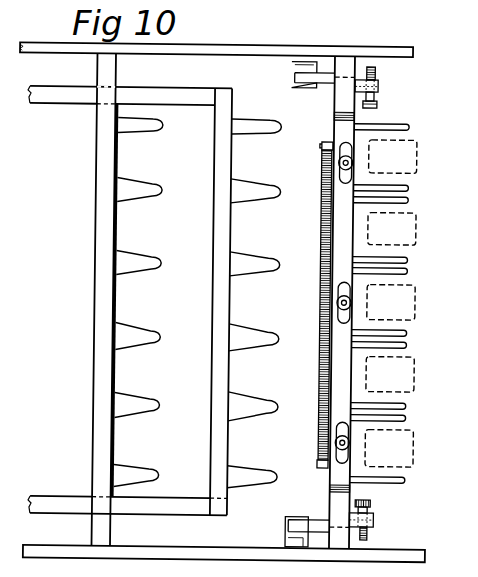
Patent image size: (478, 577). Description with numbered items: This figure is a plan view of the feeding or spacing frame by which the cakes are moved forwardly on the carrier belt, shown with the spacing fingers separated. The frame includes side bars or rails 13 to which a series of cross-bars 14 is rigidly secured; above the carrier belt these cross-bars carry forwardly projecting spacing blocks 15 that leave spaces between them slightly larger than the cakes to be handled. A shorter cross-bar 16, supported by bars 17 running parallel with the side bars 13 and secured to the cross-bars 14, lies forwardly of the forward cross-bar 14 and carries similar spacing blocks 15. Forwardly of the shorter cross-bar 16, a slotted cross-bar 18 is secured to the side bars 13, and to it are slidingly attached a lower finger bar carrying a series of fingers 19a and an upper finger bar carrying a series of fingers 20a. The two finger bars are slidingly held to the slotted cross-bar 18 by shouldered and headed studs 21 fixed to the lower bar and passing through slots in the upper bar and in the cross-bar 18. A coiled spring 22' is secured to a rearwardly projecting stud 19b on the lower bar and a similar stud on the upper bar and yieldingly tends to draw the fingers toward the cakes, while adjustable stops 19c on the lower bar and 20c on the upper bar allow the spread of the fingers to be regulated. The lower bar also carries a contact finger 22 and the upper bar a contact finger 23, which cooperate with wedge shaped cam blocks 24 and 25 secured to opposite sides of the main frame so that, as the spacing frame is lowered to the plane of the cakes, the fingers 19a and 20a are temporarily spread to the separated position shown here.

The side bars or rails 13 is at (260, 46).
The cross-bars 14 is at (148, 267).
The spacing blocks 15 is at (148, 324).
The shorter cross-bar 16 is at (214, 321).
The bars 17 is at (189, 104).
The slotted cross-bar 18 is at (345, 127).
The fingers 19a is at (403, 123).
The rearwardly projecting stud 19b is at (320, 144).
The adjustable stop 19c is at (378, 520).
The fingers 20a is at (406, 188).
The adjustable stop 20c is at (374, 85).
The shouldered and headed studs 21 is at (337, 162).
The contact finger 22 is at (301, 513).
The coiled spring 22' is at (309, 309).
The contact finger 23 is at (322, 81).
The wedge shaped cam block 24 is at (293, 537).
The wedge shaped cam block 25 is at (289, 67).